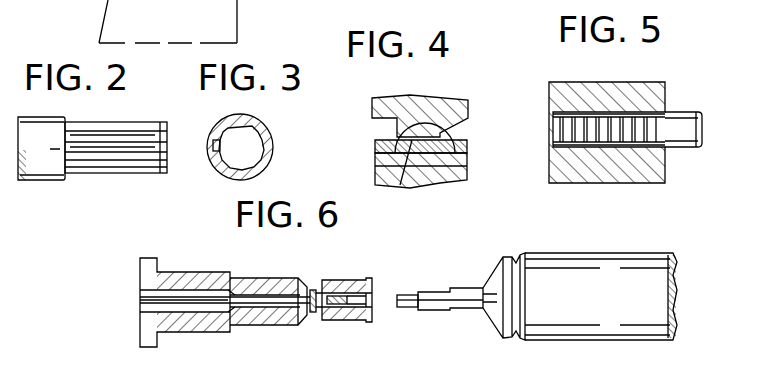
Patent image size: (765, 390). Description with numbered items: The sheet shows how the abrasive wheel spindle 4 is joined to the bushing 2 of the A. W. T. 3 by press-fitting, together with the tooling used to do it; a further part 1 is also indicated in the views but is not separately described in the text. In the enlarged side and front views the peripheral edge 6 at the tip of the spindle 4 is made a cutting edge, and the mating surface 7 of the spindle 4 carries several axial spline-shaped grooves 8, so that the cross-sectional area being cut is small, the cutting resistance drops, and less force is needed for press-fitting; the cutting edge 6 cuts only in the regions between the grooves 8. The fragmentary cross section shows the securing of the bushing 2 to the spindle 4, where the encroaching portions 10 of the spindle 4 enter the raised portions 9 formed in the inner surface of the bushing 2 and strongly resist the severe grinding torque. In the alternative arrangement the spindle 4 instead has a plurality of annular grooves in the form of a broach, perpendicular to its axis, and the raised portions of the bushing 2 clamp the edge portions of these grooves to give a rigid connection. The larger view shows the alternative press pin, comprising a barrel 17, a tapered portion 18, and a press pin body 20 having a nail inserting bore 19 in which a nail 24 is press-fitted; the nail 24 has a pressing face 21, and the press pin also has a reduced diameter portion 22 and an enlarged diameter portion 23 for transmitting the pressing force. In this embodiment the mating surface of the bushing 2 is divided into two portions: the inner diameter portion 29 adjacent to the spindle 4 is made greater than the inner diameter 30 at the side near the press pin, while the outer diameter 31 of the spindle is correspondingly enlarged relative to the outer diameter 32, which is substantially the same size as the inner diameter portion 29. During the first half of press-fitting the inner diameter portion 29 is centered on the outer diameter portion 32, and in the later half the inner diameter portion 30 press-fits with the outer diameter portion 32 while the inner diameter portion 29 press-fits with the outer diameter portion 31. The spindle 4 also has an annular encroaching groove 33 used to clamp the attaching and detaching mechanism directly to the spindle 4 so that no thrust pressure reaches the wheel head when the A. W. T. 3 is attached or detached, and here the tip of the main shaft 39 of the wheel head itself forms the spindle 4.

In FIG. 4, the connector body 1 is at (450, 185).
In FIG. 5, the connector body 1 is at (553, 82).
In FIG. 6, the connector body 1 is at (370, 278).
In FIG. 4, the bushing 2 is at (468, 150).
In FIG. 5, the bushing 2 is at (640, 112).
In FIG. 6, the A. W. T. 3 is at (352, 322).
In FIG. 5, the spindle 4 is at (683, 148).
In FIG. 6, the spindle 4 is at (478, 312).
In FIG. 2, the peripheral edge 6 is at (165, 158).
In FIG. 3, the peripheral edge 6 is at (223, 170).
In FIG. 2, the mating surface 7 is at (130, 152).
In FIG. 3, the mating surface 7 is at (265, 126).
In FIG. 4, the mating surface 7 is at (415, 184).
In FIG. 2, the spline-shaped grooves 8 is at (107, 135).
In FIG. 3, the spline-shaped grooves 8 is at (216, 140).
In FIG. 4, the spline-shaped grooves 8 is at (375, 125).
In FIG. 4, the raised portions 9 is at (385, 143).
In FIG. 4, the encroaching portions 10 is at (395, 165).
In FIG. 6, the barrel 17 is at (273, 278).
In FIG. 6, the tapered portion 18 is at (312, 288).
In FIG. 6, the nail inserting bore 19 is at (253, 307).
In FIG. 6, the press pin body 20 is at (178, 272).
In FIG. 6, the pressing face 21 is at (338, 278).
In FIG. 6, the reduced diameter portion 22 is at (292, 322).
In FIG. 6, the enlarged diameter portion 23 is at (140, 302).
In FIG. 6, the nail 24 is at (225, 312).
In FIG. 6, the inner diameter portion 29 is at (373, 305).
In FIG. 6, the inner diameter 30 is at (324, 307).
In FIG. 6, the outer diameter 31 is at (447, 290).
In FIG. 6, the outer diameter 32 is at (400, 295).
In FIG. 6, the annular encroaching groove 33 is at (517, 340).
In FIG. 6, the main shaft 39 is at (585, 340).